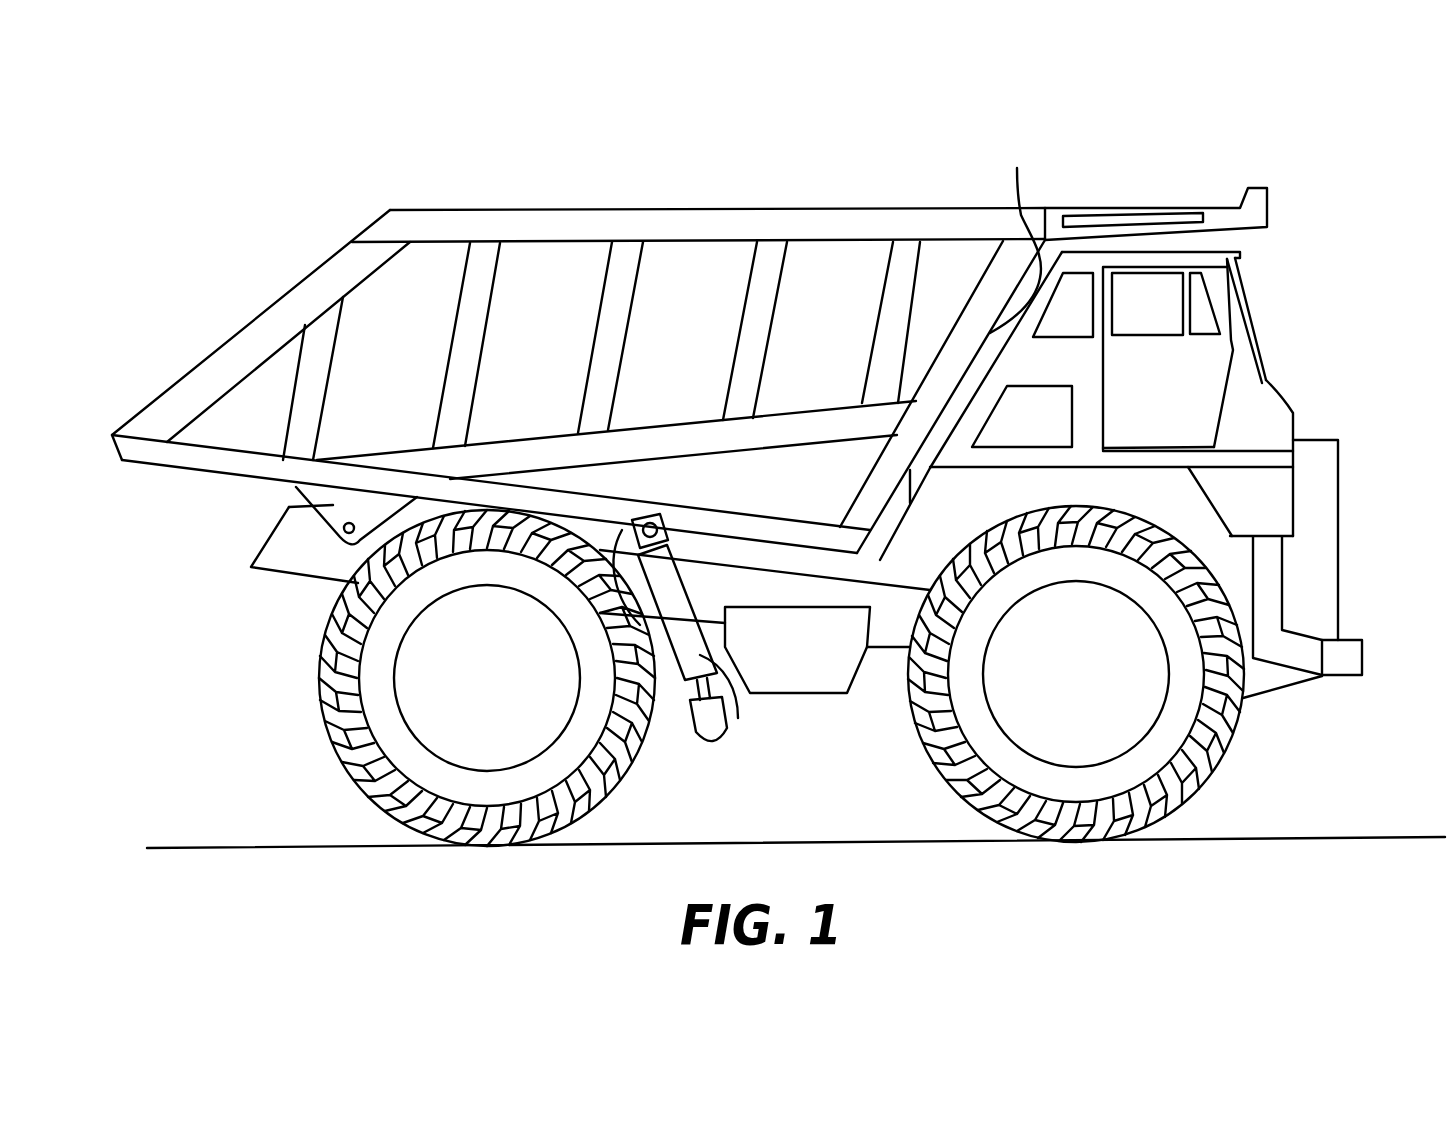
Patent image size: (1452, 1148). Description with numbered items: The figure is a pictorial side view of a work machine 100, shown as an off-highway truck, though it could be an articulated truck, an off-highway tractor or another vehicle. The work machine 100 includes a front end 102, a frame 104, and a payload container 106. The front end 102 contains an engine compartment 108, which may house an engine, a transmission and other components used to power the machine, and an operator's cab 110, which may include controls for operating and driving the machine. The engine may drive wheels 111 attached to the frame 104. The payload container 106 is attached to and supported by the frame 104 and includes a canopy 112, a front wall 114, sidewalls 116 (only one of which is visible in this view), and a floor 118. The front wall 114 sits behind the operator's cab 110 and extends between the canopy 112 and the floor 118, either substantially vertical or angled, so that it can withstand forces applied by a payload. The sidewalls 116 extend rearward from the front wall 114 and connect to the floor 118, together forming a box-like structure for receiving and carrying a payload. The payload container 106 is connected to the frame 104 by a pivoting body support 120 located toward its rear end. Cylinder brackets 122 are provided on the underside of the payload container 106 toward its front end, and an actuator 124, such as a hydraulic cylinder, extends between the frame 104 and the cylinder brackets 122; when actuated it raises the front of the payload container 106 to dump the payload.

The work machine 100 is at (1323, 99).
The front end 102 is at (1378, 393).
The frame 104 is at (880, 627).
The payload container 106 is at (518, 205).
The engine compartment 108 is at (1340, 462).
The operator's cab 110 is at (1247, 311).
The wheels 111 is at (338, 692).
The canopy 112 is at (1140, 205).
The front wall 114 is at (1018, 237).
The sidewalls 116 is at (568, 354).
The floor 118 is at (793, 547).
The pivoting body support 120 is at (330, 505).
The cylinder brackets 122 is at (677, 715).
The actuator 124 is at (745, 730).